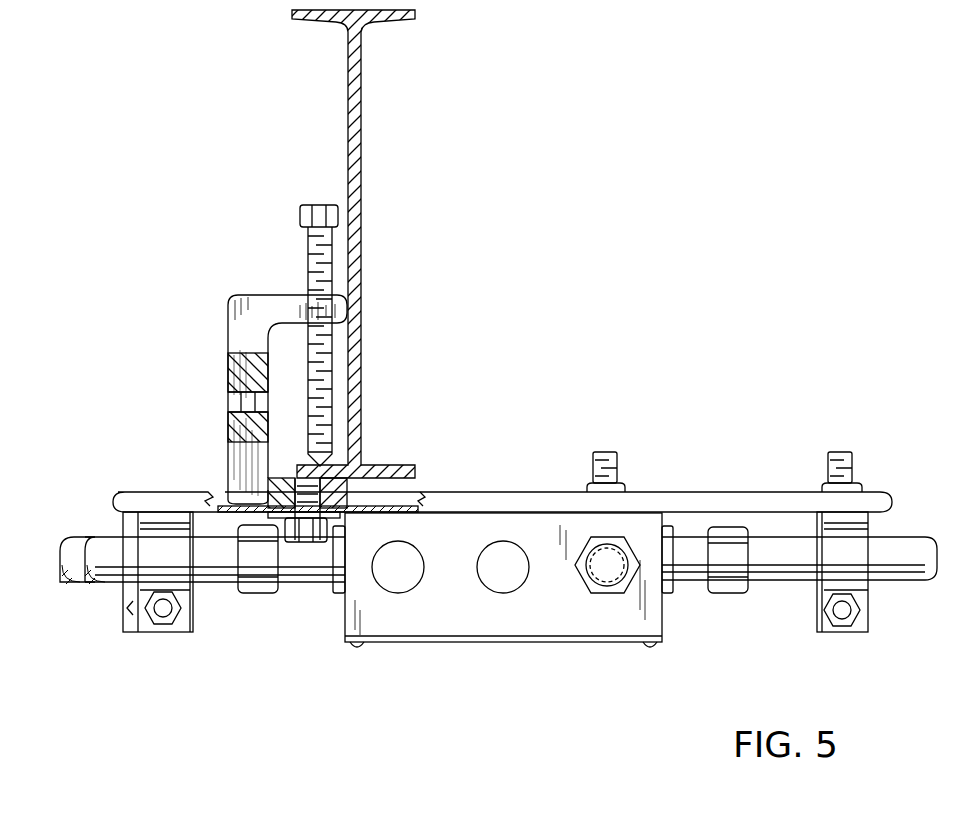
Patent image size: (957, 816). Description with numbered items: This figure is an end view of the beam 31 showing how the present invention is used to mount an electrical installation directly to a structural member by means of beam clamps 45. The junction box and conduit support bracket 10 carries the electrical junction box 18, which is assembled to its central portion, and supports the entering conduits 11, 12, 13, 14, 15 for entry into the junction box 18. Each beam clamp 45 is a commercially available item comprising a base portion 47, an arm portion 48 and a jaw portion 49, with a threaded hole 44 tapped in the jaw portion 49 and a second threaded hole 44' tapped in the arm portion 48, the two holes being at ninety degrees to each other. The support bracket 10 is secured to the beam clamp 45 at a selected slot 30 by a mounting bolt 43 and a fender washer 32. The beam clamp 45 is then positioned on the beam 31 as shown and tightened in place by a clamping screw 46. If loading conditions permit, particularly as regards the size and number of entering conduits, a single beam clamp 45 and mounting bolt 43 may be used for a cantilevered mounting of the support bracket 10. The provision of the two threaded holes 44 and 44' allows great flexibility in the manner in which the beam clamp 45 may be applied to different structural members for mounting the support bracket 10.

The junction box and conduit support bracket 10 is at (725, 492).
The conduit 11 is at (105, 583).
The conduit 12 is at (82, 560).
The conduit 13 is at (158, 572).
The conduit 14 is at (609, 592).
The conduit 15 is at (783, 582).
The electrical junction box 18 is at (540, 621).
The slot 30 is at (302, 542).
The beam 31 is at (362, 123).
The fender washer 32 is at (333, 553).
The mounting bolt 43 is at (304, 515).
The threaded hole 44 is at (307, 509).
The threaded hole 44' is at (229, 382).
The beam clamp 45 is at (255, 377).
The clamping screw 46 is at (308, 250).
The base portion 47 is at (282, 294).
The arm portion 48 is at (230, 422).
The jaw portion 49 is at (290, 478).